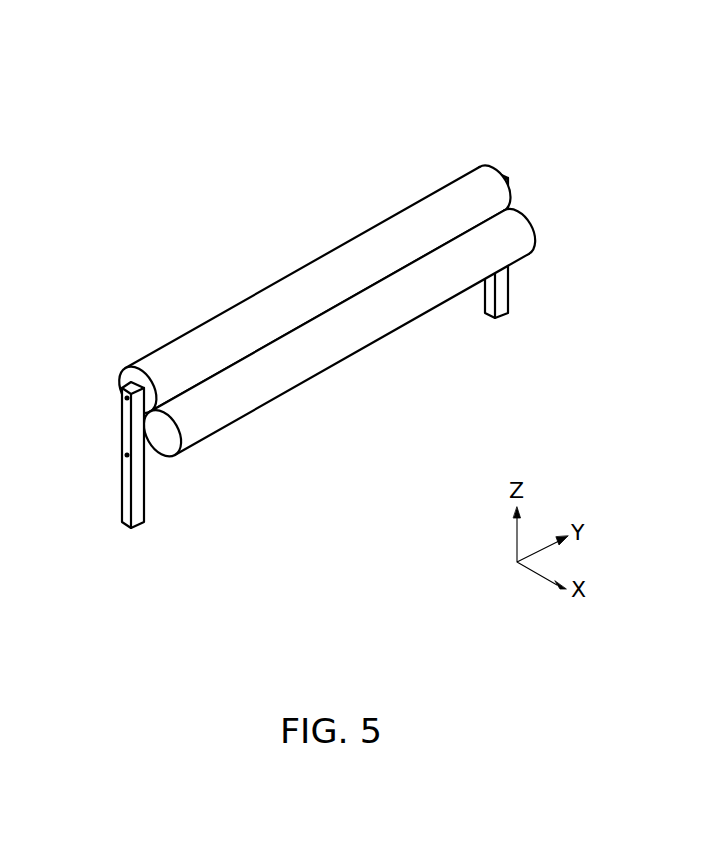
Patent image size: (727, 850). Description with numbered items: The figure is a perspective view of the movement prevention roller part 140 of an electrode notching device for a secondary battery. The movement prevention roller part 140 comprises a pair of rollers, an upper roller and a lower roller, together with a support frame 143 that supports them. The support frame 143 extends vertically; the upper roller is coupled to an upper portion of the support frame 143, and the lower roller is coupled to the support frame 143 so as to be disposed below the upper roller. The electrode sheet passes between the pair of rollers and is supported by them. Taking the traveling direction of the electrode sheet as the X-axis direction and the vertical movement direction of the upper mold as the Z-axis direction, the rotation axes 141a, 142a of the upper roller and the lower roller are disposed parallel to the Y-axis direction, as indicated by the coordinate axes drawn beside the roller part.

The movement prevention roller part 140 is at (423, 112).
The rotation axis of the upper roller 141a is at (120, 398).
The rotation axis of the lower roller 142a is at (120, 456).
The support frame 143 is at (327, 379).